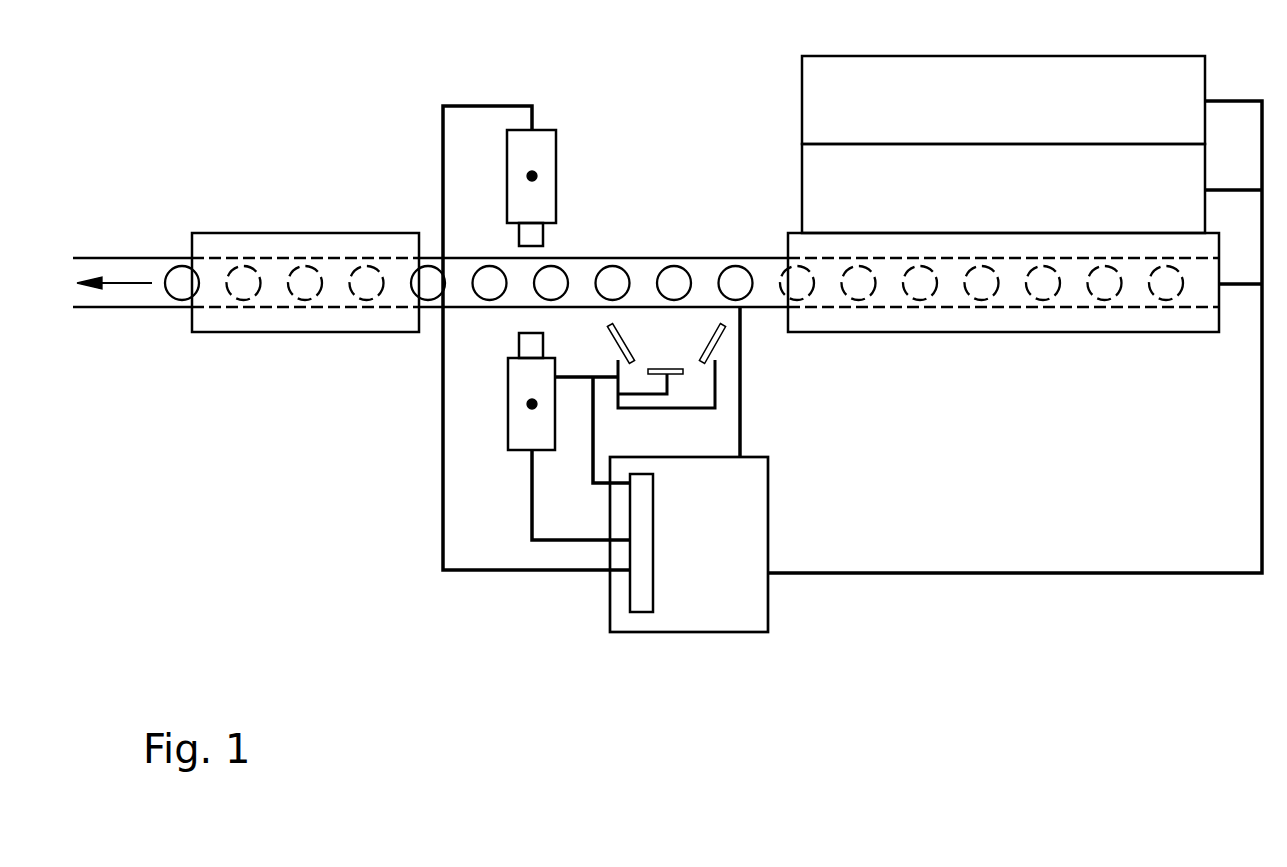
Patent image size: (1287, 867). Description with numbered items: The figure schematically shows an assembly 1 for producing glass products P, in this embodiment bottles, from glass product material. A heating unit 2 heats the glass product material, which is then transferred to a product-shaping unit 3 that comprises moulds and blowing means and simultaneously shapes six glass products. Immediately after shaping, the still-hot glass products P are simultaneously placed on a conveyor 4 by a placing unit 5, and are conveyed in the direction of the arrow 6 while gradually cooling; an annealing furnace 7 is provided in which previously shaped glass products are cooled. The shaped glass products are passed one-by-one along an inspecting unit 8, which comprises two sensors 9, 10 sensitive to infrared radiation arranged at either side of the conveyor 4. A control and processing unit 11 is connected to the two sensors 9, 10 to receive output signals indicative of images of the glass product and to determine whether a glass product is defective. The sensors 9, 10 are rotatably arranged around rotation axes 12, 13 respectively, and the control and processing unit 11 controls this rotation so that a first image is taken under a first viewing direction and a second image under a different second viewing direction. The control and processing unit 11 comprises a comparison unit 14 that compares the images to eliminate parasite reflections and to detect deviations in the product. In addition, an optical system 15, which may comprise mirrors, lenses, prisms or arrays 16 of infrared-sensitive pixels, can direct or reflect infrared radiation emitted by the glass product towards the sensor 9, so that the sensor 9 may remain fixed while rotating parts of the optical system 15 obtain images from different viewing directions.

The assembly 1 is at (214, 556).
The heating unit 2 is at (993, 116).
The product-shaping unit 3 is at (993, 204).
The conveyor 4 is at (594, 257).
The placing unit 5 is at (1163, 320).
The arrow 6 is at (128, 285).
The annealing furnace 7 is at (215, 245).
The inspecting unit 8 is at (417, 386).
The sensor 9 is at (518, 370).
The sensor 10 is at (518, 212).
The control and processing unit 11 is at (698, 559).
The rotation axis 12 is at (527, 405).
The rotation axis 13 is at (527, 176).
The comparison unit 14 is at (645, 495).
The optical system 15 is at (728, 389).
The arrays of infrared-sensitive pixels 16 is at (710, 341).
The glass products P is at (738, 285).